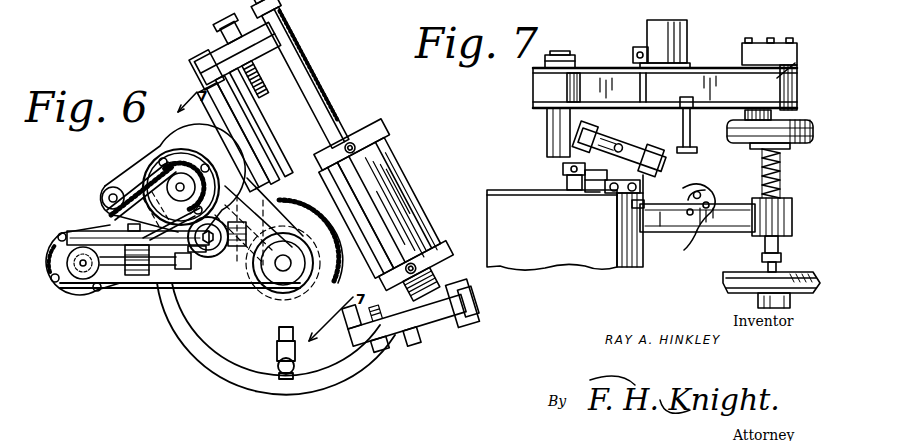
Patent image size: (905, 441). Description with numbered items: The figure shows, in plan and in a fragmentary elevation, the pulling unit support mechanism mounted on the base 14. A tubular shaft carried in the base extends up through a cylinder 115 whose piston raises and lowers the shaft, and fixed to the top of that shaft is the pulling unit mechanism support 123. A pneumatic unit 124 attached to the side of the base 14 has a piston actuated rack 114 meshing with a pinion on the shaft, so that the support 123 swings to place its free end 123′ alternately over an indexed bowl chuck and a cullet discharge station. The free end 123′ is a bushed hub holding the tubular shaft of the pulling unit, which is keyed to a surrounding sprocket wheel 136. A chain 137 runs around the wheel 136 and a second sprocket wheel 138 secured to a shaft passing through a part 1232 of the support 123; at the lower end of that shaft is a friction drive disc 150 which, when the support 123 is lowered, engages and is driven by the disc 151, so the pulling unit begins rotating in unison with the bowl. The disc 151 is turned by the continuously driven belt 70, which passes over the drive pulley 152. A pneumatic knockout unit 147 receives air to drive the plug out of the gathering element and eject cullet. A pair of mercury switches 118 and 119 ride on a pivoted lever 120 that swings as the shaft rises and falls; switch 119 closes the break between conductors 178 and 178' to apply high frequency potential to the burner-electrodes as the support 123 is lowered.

In FIG. 6, the base 14 is at (213, 334).
In FIG. 7, the chuck drive belt 70 is at (812, 276).
In FIG. 6, the piston actuated rack 114 is at (240, 130).
In FIG. 7, the cylinder 115 is at (502, 224).
In FIG. 7, the mercury switch 118 is at (597, 180).
In FIG. 7, the mercury switch 119 is at (617, 203).
In FIG. 7, the pivoted lever 120 is at (619, 118).
In FIG. 6, the pulling unit mechanism support 123 is at (158, 283).
In FIG. 7, the pulling unit mechanism support 123 is at (702, 82).
In FIG. 6, the free end of support 123′ is at (54, 276).
In FIG. 6, the part of support 1232 is at (172, 160).
In FIG. 7, the part of support 1232 is at (808, 32).
In FIG. 6, the pneumatic unit 124 is at (388, 166).
In FIG. 6, the sprocket wheel 136 is at (47, 248).
In FIG. 6, the chain 137 is at (93, 213).
In FIG. 6, the sprocket wheel 138 is at (212, 165).
In FIG. 7, the pneumatic knockout unit 147 is at (652, 35).
In FIG. 7, the friction drive disc 150 is at (795, 106).
In FIG. 7, the friction drive disc 151 is at (803, 147).
In FIG. 7, the drive pulley 152 is at (736, 286).
In FIG. 7, the conductor 178 is at (712, 201).
In FIG. 7, the conductor 178' is at (660, 220).